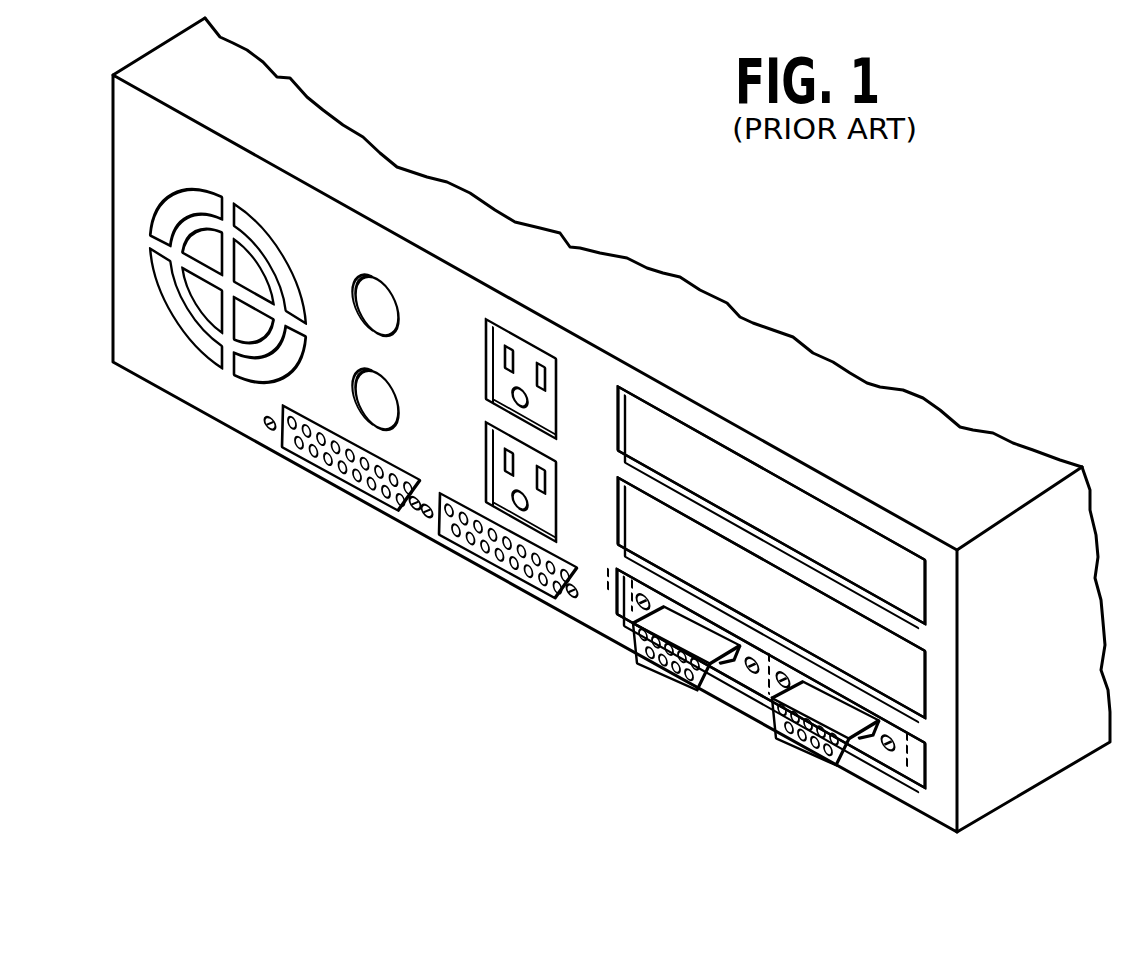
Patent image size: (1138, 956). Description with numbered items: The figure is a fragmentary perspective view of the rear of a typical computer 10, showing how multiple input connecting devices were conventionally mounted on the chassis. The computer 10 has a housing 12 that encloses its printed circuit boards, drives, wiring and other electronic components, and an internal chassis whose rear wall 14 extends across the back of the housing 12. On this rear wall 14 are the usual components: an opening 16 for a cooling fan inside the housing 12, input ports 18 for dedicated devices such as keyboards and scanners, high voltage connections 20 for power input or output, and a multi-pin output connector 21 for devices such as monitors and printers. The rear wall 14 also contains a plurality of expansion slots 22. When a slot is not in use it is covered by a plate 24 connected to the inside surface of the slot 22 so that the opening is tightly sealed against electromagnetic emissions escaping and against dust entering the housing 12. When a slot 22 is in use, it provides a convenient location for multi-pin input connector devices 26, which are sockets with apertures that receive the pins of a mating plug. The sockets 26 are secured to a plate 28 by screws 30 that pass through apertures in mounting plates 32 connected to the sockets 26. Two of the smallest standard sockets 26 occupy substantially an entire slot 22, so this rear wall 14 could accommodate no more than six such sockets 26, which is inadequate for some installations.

The computer 10 is at (880, 259).
The housing 12 is at (578, 250).
The rear wall 14 is at (604, 378).
The opening 16 is at (188, 190).
The input ports 18 is at (372, 336).
The high voltage connections 20 is at (538, 345).
The multi-pin output connectors 21 is at (325, 478).
The expansion slots 22 is at (927, 587).
The plates 24 is at (746, 476).
The multi-pin input connector devices 26 is at (660, 672).
The plate 28 is at (916, 768).
The screws 30 is at (636, 610).
The mounting plates 32 is at (612, 563).